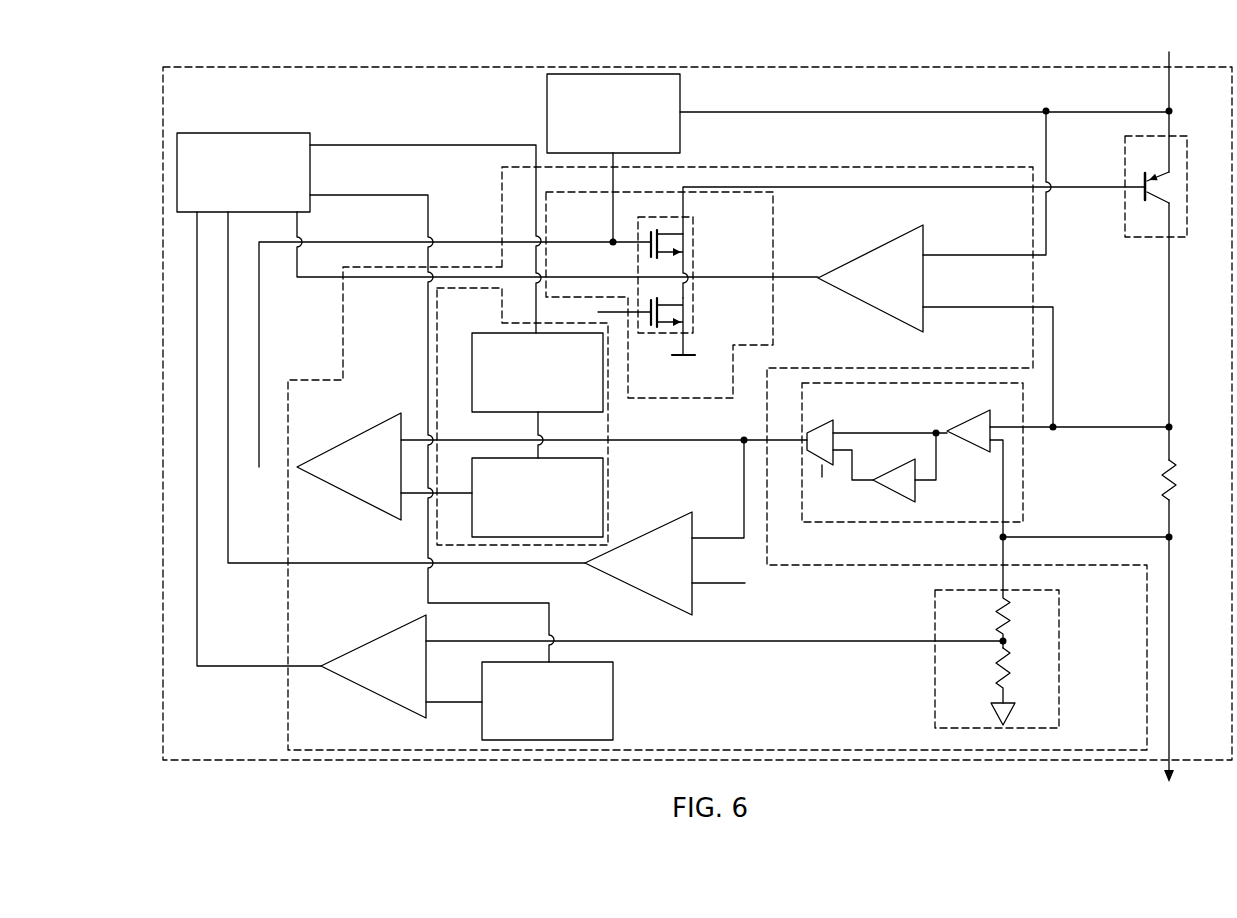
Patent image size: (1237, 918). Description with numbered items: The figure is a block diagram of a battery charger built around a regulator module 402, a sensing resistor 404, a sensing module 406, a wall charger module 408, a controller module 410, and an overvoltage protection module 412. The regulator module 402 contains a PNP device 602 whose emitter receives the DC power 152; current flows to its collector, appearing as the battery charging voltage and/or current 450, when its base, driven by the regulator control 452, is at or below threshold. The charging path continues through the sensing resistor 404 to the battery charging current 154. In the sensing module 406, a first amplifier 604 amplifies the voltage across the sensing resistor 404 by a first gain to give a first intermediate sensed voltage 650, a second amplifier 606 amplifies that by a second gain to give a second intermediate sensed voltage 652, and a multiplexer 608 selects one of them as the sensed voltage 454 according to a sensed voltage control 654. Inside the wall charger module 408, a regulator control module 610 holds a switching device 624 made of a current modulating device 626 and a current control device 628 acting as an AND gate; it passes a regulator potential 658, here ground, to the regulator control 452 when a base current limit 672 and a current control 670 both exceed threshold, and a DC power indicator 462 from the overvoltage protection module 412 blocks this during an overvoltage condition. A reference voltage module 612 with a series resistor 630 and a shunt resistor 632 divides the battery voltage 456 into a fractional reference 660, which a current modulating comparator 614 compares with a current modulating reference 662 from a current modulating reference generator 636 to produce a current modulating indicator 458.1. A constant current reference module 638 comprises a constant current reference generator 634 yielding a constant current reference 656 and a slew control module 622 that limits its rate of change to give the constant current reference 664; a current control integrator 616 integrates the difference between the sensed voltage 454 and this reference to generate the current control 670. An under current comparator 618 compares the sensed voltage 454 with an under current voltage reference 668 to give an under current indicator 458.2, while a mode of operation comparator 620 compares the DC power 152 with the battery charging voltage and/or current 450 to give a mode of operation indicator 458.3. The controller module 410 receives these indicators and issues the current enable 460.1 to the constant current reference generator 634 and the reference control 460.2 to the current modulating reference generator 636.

The DC power 152 is at (1170, 72).
The battery charging current 154 is at (1172, 788).
The regulator module 402 is at (1182, 135).
The sensing resistor 404 is at (1178, 478).
The sensing module 406 is at (1024, 470).
The wall charger module 408 is at (861, 166).
The controller module 410 is at (251, 133).
The overvoltage protection module 412 is at (682, 90).
The battery charging voltage and/or current 450 is at (1170, 333).
The regulator control 452 is at (1092, 186).
The sensed voltage 454 is at (788, 440).
The battery voltage 456 is at (1172, 540).
The current modulating indicator 458.1 is at (258, 669).
The under current indicator 458.2 is at (249, 566).
The mode of operation indicator 458.3 is at (295, 278).
The current enable 460.1 is at (381, 144).
The reference control 460.2 is at (381, 194).
The DC power indicator 462 is at (612, 210).
The PNP device 602 is at (1170, 185).
The first amplifier 604 is at (972, 452).
The second amplifier 606 is at (886, 474).
The multiplexer 608 is at (826, 420).
The regulator control module 610 is at (774, 218).
The reference voltage module 612 is at (935, 615).
The current modulating comparator 614 is at (368, 644).
The current control integrator 616 is at (346, 441).
The under current comparator 618 is at (632, 587).
The mode of operation comparator 620 is at (866, 255).
The slew control module 622 is at (604, 490).
The switching device 624 is at (694, 218).
The current modulating device 626 is at (684, 245).
The current control device 628 is at (684, 313).
The series resistor 630 is at (1000, 618).
The shunt resistor 632 is at (1000, 665).
The constant current reference generator 634 is at (478, 333).
The current modulating reference generator 636 is at (614, 678).
The constant current reference module 638 is at (609, 425).
The first intermediate sensed voltage 650 is at (884, 433).
The second intermediate sensed voltage 652 is at (849, 490).
The sensed voltage control 654 is at (822, 483).
The constant current reference 656 is at (543, 438).
The regulator potential 658 is at (686, 367).
The fractional reference 660 is at (796, 644).
The current modulating reference 662 is at (455, 700).
The constant current reference 664 is at (455, 496).
The under current voltage reference 668 is at (735, 583).
The current control 670 is at (259, 470).
The base current limit 672 is at (608, 312).